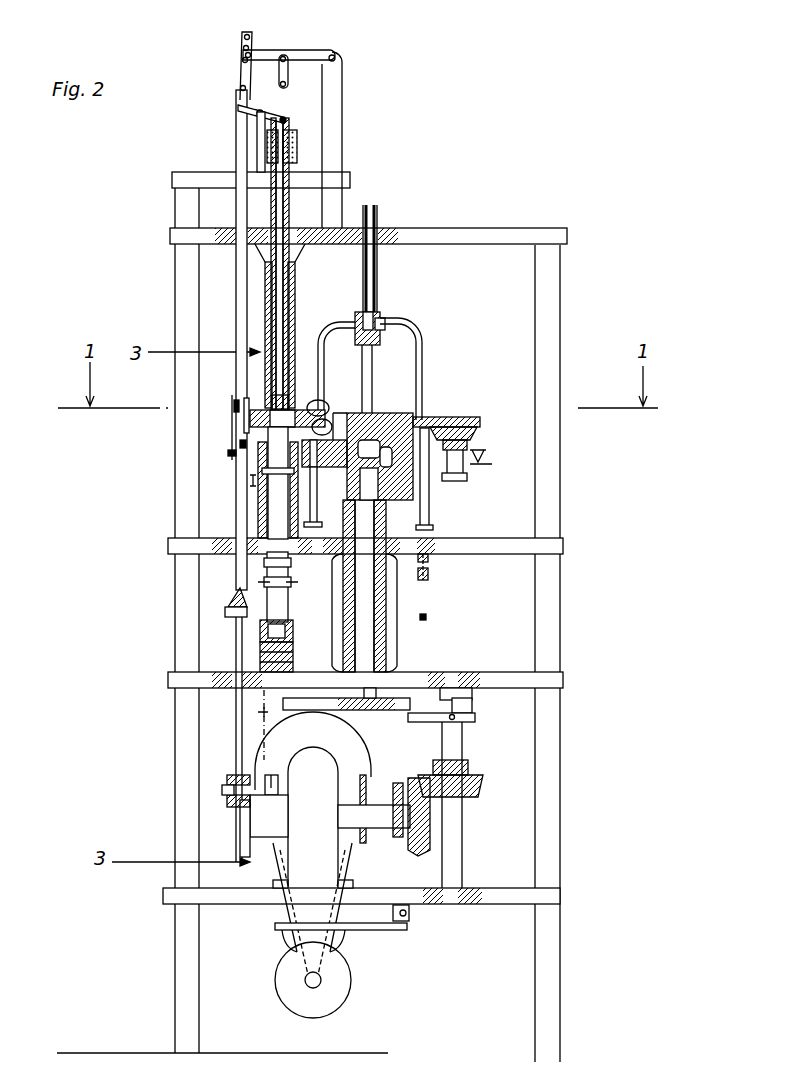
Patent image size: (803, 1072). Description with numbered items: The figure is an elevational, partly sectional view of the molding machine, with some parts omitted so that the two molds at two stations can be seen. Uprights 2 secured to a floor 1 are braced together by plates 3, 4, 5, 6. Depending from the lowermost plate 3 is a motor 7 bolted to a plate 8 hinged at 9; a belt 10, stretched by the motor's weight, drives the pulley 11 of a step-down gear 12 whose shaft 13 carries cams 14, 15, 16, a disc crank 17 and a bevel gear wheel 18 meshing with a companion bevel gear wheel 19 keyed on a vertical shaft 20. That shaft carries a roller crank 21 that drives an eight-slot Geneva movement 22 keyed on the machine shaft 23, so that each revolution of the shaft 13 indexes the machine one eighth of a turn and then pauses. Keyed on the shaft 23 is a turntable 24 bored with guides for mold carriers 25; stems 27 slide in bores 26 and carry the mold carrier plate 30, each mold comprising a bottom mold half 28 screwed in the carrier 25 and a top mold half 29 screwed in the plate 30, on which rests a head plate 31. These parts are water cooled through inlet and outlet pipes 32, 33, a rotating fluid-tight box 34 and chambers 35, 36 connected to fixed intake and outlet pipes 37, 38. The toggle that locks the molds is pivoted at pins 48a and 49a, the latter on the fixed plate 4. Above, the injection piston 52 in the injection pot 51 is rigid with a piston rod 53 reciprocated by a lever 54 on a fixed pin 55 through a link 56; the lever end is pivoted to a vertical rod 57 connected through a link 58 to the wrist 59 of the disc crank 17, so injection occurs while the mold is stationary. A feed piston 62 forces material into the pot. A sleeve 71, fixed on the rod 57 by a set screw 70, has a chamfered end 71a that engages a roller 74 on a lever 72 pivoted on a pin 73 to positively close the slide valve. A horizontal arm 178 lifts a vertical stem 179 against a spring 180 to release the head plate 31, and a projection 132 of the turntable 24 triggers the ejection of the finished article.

The floor 1 is at (250, 1062).
The uprights 2 is at (186, 982).
The plate 3 is at (216, 898).
The plate 4 is at (200, 682).
The plate 5 is at (203, 545).
The plate 6 is at (215, 236).
The motor 7 is at (340, 980).
The plate 8 is at (375, 930).
The hinge 9 is at (409, 918).
The belt 10 is at (349, 868).
The pulley 11 is at (372, 762).
The step-down gear 12 is at (313, 817).
The shaft 13 is at (368, 814).
The cam 14 is at (272, 778).
The cam 15 is at (366, 786).
The cam 16 is at (412, 770).
The disc crank 17 is at (242, 835).
The bevel gear wheel 18 is at (425, 852).
The bevel gear wheel 19 is at (483, 792).
The vertical shaft 20 is at (452, 832).
The roller crank 21 is at (432, 704).
The Geneva movement 22 is at (402, 704).
The shaft 23 is at (392, 612).
The turntable 24 is at (390, 457).
The mold carrier 25 is at (276, 462).
The bores 26 is at (386, 490).
The stems 27 is at (313, 502).
The bottom mold half 28 is at (466, 441).
The top mold half 29 is at (462, 425).
The mold carrier plate 30 is at (470, 425).
The head plate 31 is at (318, 404).
The water inlet pipe 32 is at (405, 344).
The water outlet pipe 33 is at (425, 340).
The fluid-tight box 34 is at (356, 316).
The chamber 35 is at (358, 348).
The chamber 36 is at (382, 316).
The intake pipe 37 is at (378, 266).
The outlet pipe 38 is at (362, 262).
The pin 48a is at (292, 630).
The pin 49a is at (292, 660).
The injection pot 51 is at (265, 332).
The injection piston 52 is at (272, 397).
The piston rod 53 is at (278, 305).
The lever 54 is at (305, 55).
The fixed pin 55 is at (338, 60).
The link 56 is at (288, 78).
The vertical rod 57 is at (240, 153).
The link 58 is at (238, 710).
The wrist 59 is at (232, 792).
The feed piston 62 is at (272, 192).
The set screw 70 is at (238, 447).
The sleeve 71 is at (228, 433).
The chamfered upper end 71a is at (233, 408).
The lever 72 is at (245, 414).
The pin 73 is at (257, 405).
The roller 74 is at (269, 429).
The projection 132 is at (504, 457).
The horizontal arm 178 is at (428, 617).
The vertical stem 179 is at (430, 566).
The spring 180 is at (420, 562).